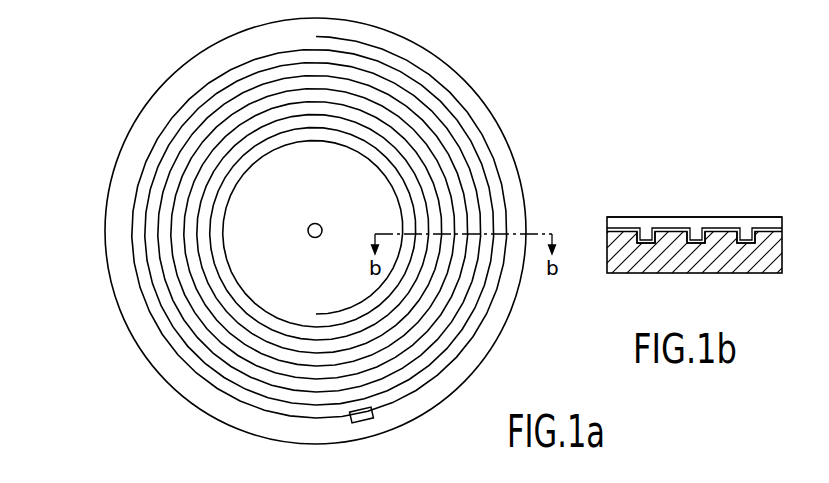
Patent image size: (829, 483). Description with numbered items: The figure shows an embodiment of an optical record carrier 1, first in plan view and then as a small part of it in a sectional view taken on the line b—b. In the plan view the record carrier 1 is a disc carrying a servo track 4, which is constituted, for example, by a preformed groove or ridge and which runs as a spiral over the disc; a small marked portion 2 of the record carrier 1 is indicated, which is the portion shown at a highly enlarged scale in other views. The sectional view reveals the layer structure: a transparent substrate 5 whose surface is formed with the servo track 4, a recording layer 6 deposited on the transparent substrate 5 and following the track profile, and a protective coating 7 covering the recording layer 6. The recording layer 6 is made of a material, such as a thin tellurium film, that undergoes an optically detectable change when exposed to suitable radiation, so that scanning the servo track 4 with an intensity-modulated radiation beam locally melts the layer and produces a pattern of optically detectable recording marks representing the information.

In FIG. 1A, the record carrier 1 is at (476, 76).
In FIG. 1B, the record carrier 1 is at (621, 186).
In FIG. 1A, the portion of the record carrier 2 is at (365, 422).
In FIG. 1A, the servo track 4 is at (182, 360).
In FIG. 1B, the servo track 4 is at (740, 248).
In FIG. 1B, the transparent substrate 5 is at (625, 262).
In FIG. 1B, the recording layer 6 is at (757, 227).
In FIG. 1B, the protective coating 7 is at (692, 222).